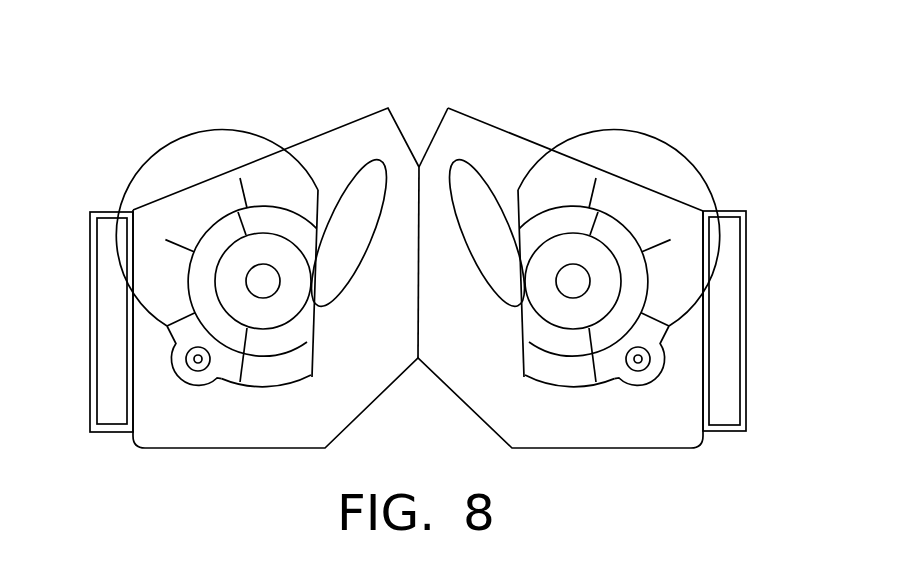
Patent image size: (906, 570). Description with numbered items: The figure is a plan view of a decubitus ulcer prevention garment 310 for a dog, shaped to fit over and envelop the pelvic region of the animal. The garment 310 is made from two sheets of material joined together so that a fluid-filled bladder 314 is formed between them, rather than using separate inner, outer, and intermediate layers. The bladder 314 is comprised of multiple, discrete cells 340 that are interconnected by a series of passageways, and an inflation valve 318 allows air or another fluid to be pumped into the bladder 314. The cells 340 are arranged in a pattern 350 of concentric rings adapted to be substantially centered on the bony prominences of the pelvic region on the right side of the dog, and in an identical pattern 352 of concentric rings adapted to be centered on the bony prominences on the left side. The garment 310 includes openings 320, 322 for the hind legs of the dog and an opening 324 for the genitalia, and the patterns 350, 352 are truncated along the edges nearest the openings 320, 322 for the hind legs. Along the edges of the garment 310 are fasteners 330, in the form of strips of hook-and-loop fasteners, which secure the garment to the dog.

The decubitus ulcer prevention garment 310 is at (145, 80).
The fluid-filled bladder 314 is at (208, 208).
The inflation valve 318 is at (197, 360).
The opening 320 is at (373, 153).
The opening 322 is at (470, 162).
The opening 324 is at (407, 135).
The fasteners 330 is at (103, 282).
The cells 340 is at (228, 337).
The pattern 350 is at (261, 163).
The pattern 352 is at (652, 192).